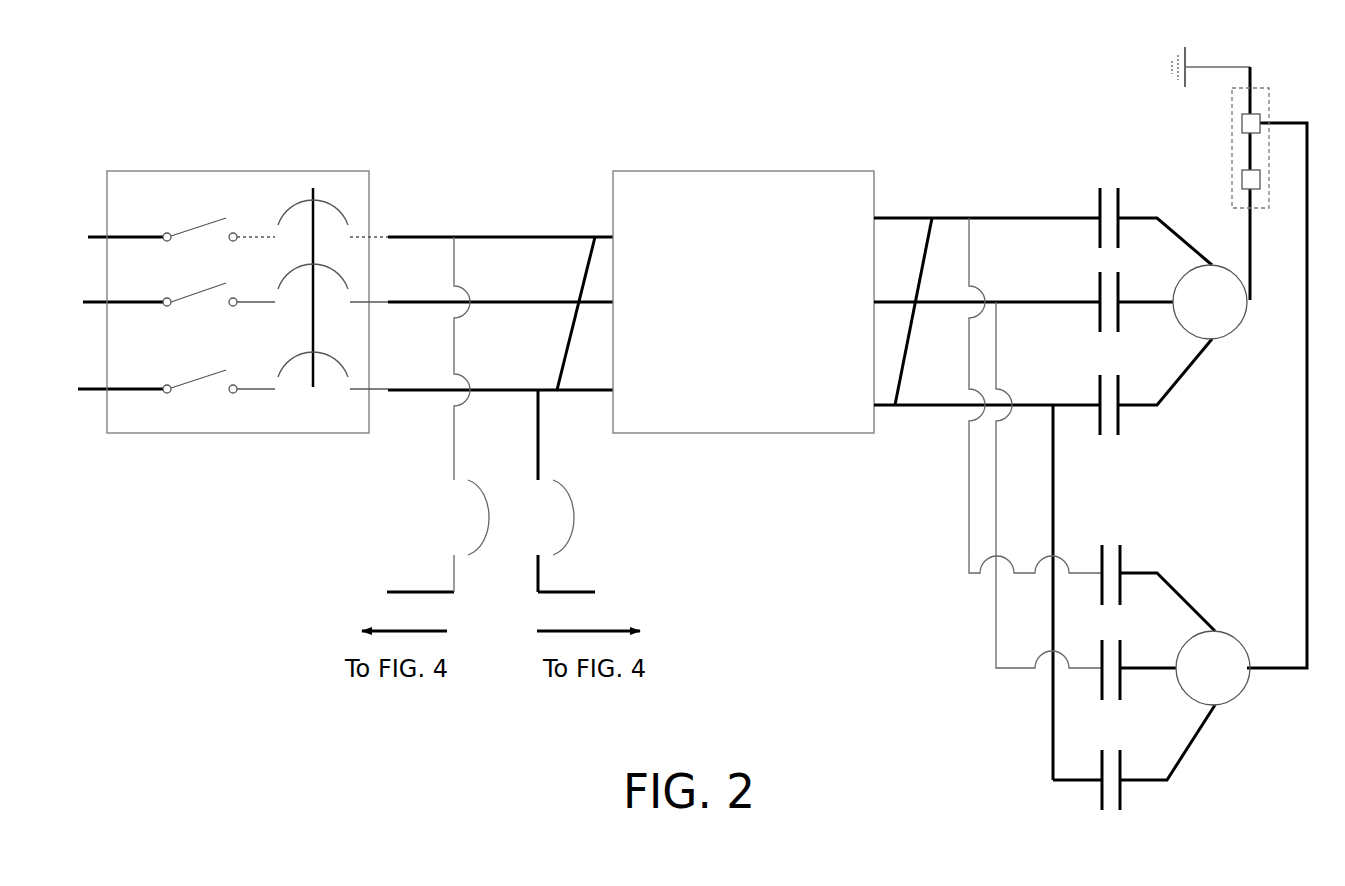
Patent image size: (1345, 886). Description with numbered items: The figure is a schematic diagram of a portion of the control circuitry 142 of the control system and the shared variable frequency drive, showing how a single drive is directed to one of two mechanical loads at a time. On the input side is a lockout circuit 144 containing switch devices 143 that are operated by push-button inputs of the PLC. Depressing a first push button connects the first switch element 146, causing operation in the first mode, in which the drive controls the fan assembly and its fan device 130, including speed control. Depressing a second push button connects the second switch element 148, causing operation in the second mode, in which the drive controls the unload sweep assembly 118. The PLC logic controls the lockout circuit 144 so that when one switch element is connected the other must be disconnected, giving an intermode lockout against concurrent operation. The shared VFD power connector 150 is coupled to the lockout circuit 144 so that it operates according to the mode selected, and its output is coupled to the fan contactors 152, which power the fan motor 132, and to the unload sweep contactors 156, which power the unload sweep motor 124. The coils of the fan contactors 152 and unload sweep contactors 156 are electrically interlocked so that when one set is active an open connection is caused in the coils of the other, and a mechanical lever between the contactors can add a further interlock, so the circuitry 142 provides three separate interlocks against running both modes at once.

The unload sweep assembly 118 is at (1232, 690).
The unload sweep motor 124 is at (1248, 115).
The fan device 130 is at (1232, 332).
The fan motor 132 is at (1248, 171).
The control circuitry 142 is at (817, 150).
The switch devices 143 is at (237, 208).
The lockout circuit 144 is at (363, 147).
The first switch element 146 is at (192, 232).
The second switch element 148 is at (212, 378).
The shared VFD power connector 150 is at (877, 427).
The fan contactors 152 is at (1086, 186).
The unload sweep contactors 156 is at (1140, 543).